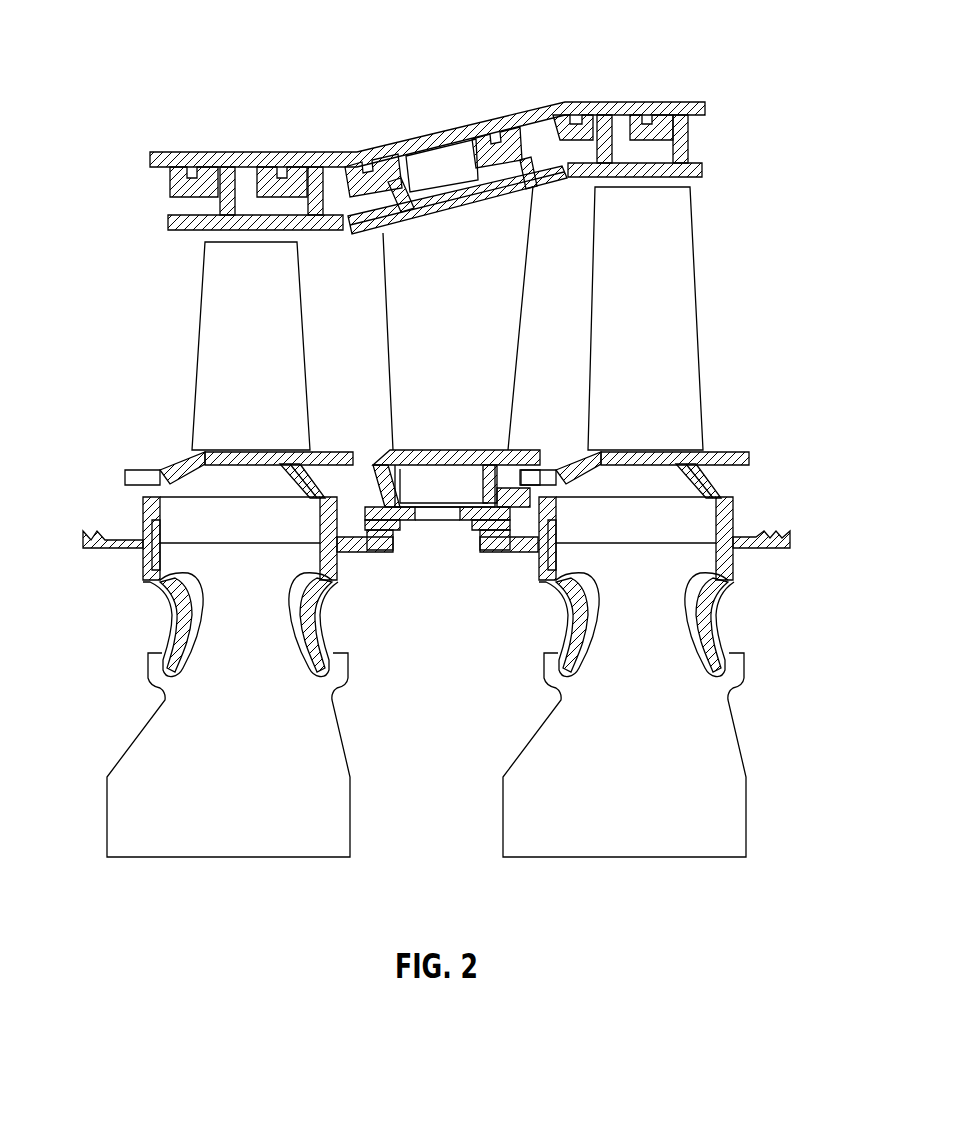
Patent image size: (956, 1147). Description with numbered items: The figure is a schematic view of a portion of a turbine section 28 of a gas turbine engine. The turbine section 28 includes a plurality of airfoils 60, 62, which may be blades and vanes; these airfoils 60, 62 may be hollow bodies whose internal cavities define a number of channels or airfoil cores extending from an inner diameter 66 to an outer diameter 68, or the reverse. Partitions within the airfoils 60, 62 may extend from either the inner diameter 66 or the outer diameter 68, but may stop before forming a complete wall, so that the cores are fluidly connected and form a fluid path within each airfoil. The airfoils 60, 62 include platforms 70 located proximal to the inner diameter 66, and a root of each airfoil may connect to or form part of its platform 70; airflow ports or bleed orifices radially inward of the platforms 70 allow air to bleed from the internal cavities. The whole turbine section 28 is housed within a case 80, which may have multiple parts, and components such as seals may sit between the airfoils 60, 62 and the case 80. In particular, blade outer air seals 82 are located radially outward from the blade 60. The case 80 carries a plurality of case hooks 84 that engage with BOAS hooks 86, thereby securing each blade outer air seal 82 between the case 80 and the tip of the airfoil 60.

The turbine section 28 is at (434, 433).
The airfoil 60 is at (283, 307).
The airfoil 62 is at (500, 273).
The inner diameter 66 is at (378, 437).
The outer diameter 68 is at (186, 262).
The platform 70 is at (515, 453).
The case 80 is at (440, 132).
The blade outer air seal 82 is at (243, 222).
The case hook 84 is at (172, 174).
The BOAS hook 86 is at (224, 180).